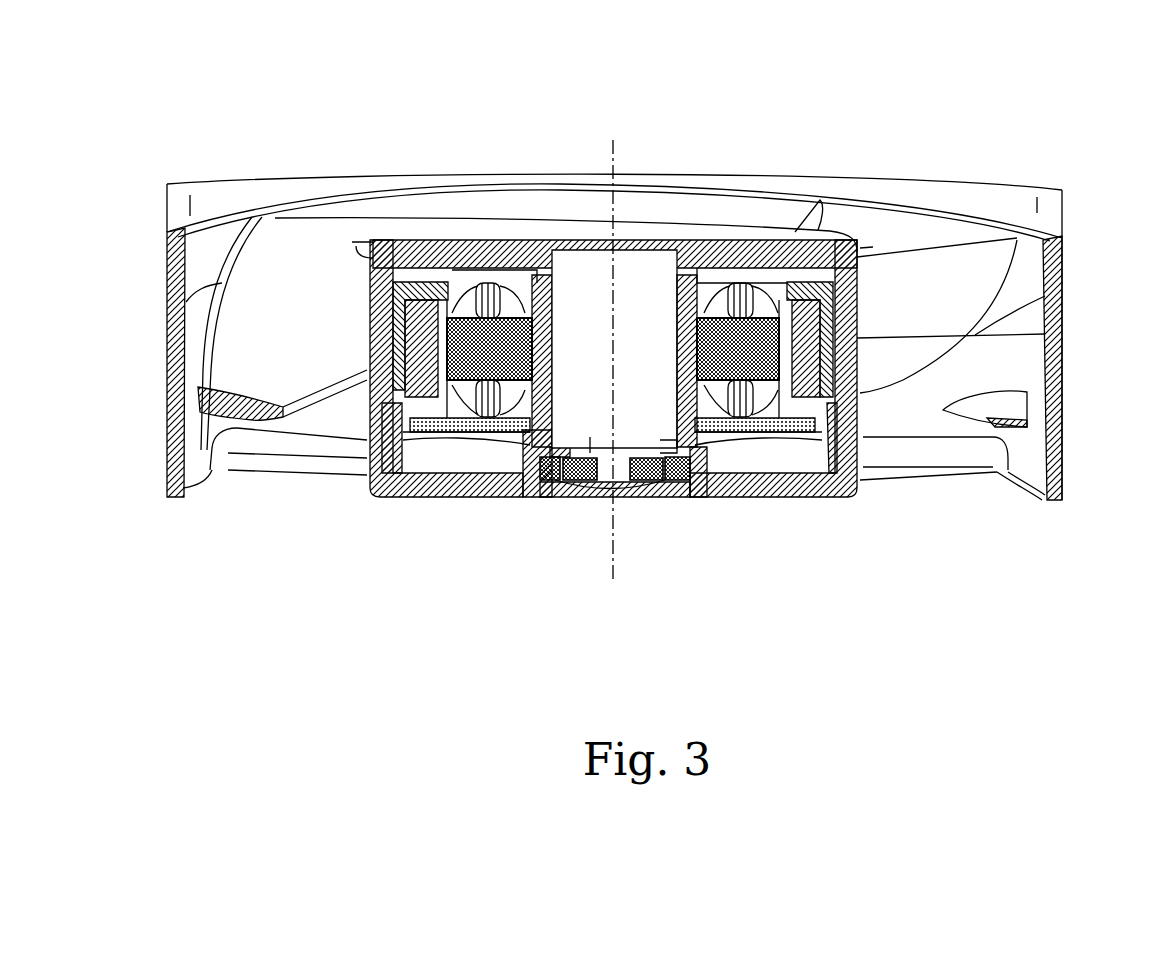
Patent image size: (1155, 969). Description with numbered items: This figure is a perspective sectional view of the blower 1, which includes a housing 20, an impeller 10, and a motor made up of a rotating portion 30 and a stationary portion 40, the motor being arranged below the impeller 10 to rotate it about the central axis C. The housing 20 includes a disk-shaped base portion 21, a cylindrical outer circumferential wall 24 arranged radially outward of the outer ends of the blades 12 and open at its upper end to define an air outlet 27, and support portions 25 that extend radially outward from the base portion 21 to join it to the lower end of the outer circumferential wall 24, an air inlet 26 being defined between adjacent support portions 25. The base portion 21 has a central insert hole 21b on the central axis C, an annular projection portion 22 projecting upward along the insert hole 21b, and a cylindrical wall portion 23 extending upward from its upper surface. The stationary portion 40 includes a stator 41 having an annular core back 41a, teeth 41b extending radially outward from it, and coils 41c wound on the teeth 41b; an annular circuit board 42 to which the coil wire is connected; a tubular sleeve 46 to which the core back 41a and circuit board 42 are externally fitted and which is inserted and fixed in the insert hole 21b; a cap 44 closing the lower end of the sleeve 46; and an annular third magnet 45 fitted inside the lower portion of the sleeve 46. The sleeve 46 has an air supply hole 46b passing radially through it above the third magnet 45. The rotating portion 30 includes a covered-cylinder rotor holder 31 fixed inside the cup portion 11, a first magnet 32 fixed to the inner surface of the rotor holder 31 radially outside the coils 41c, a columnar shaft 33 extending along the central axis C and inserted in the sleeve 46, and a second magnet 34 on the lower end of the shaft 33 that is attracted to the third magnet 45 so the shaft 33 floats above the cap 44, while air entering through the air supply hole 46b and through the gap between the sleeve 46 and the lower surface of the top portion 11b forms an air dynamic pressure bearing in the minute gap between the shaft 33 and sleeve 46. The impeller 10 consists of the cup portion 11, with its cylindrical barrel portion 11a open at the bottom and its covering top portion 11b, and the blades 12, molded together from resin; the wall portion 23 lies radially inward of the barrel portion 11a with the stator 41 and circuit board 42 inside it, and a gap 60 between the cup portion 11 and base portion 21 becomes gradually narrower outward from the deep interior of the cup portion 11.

The blower 1 is at (973, 98).
The impeller 10 is at (508, 83).
The cup portion 11 is at (586, 225).
The barrel portion 11a is at (1055, 338).
The top portion 11b is at (714, 250).
The blades 12 is at (513, 208).
The housing 20 is at (938, 180).
The base portion 21 is at (462, 445).
The insert hole 21b is at (700, 503).
The projection portion 22 is at (704, 503).
The wall portion 23 is at (833, 507).
The outer circumferential wall 24 is at (1062, 455).
The support portions 25 is at (878, 462).
The air inlet 26 is at (1012, 472).
The air outlet 27 is at (323, 208).
The rotating portion 30 is at (434, 274).
The rotor holder 31 is at (833, 238).
The first magnet 32 is at (810, 248).
The shaft 33 is at (584, 503).
The second magnet 34 is at (567, 503).
The stationary portion 40 is at (493, 365).
The stator 41 is at (430, 503).
The core back 41a is at (690, 250).
The teeth 41b is at (770, 430).
The coils 41c is at (742, 440).
The circuit board 42 is at (458, 375).
The cap 44 is at (653, 503).
The third magnet 45 is at (537, 503).
The sleeve 46 is at (515, 503).
The air supply hole 46b is at (680, 503).
The gap 60 is at (834, 502).
The central axis C is at (614, 140).